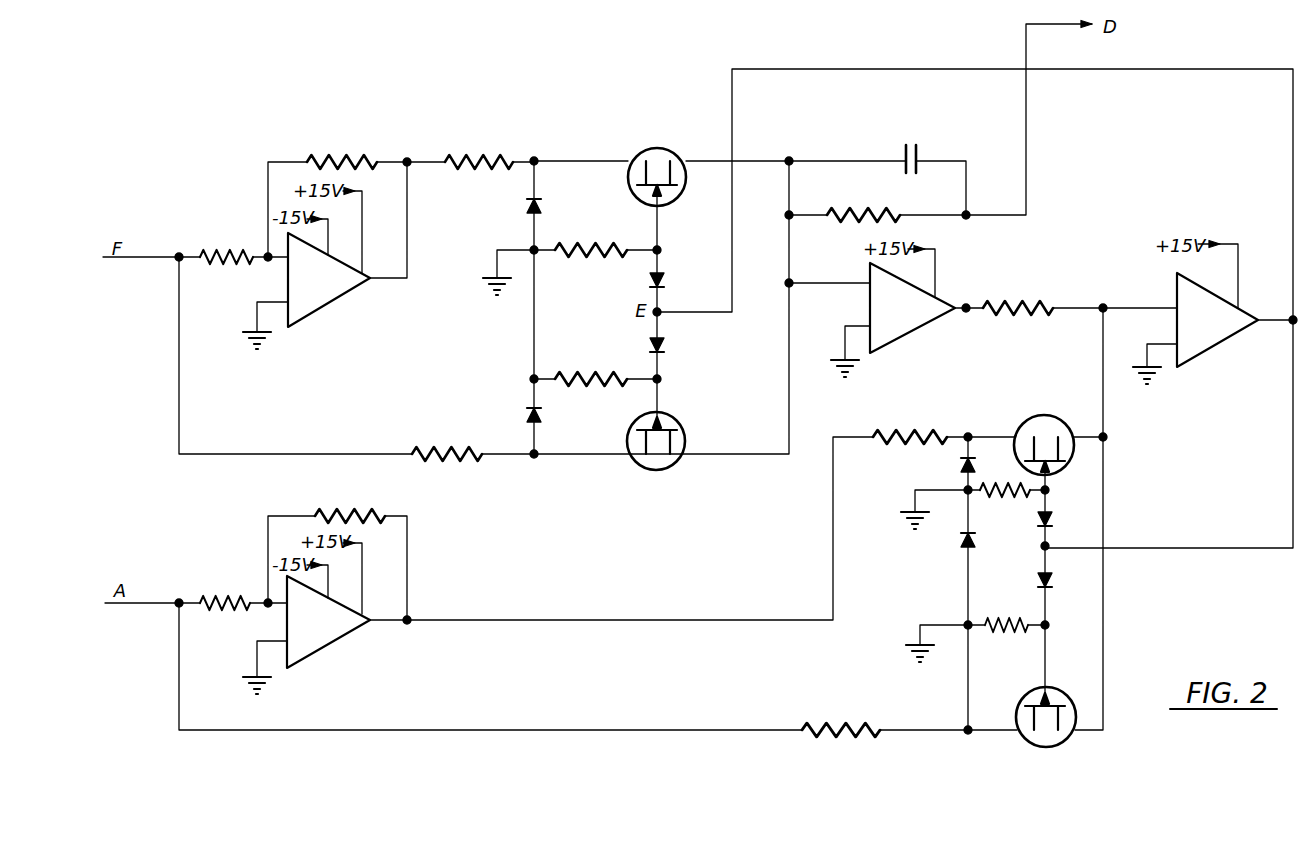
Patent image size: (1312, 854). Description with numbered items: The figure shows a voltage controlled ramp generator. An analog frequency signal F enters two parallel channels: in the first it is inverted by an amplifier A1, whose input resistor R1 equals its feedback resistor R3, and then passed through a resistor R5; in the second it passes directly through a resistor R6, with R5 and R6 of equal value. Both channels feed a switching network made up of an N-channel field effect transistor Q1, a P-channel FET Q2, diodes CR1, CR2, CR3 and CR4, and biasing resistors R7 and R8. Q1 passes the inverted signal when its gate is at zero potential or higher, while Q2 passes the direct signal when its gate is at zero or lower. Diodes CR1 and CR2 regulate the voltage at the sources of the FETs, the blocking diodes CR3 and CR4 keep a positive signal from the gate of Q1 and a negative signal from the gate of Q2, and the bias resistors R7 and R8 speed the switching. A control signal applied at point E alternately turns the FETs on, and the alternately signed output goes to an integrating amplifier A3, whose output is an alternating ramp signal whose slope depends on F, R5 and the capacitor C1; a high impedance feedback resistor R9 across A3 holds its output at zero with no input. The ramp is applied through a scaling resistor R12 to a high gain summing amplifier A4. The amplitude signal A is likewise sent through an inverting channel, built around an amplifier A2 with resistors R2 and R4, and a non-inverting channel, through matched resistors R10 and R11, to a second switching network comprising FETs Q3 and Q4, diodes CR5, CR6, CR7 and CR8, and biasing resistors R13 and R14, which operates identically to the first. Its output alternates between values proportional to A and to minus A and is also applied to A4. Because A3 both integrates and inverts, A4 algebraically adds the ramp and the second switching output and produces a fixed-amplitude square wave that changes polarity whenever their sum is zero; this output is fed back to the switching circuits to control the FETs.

The resistor R1 is at (226, 247).
The resistor R2 is at (225, 592).
The resistor R3 is at (342, 152).
The resistor R4 is at (350, 505).
The resistor R5 is at (479, 150).
The resistor R6 is at (447, 445).
The bias resistor R7 is at (591, 240).
The bias resistor R8 is at (591, 369).
The high impedance feedback resistor R9 is at (863, 207).
The matched resistor R10 is at (910, 428).
The matched resistor R11 is at (841, 721).
The scaling resistor R12 is at (1018, 299).
The bias resistor R13 is at (1005, 501).
The bias resistor R14 is at (1006, 615).
The capacitor C1 is at (908, 148).
The diode CR1 is at (507, 208).
The diode CR2 is at (507, 415).
The blocking diode CR3 is at (677, 280).
The blocking diode CR4 is at (678, 345).
The diode CR5 is at (946, 469).
The diode CR6 is at (947, 541).
The diode CR7 is at (1064, 520).
The diode CR8 is at (1064, 580).
The N-channel field effect transistor Q1 is at (655, 177).
The P-channel FET Q2 is at (655, 439).
The FET Q3 is at (1042, 442).
The FET Q4 is at (1044, 717).
The amplifier A1 is at (329, 280).
The amplifier A2 is at (328, 622).
The integrating amplifier A3 is at (912, 308).
The high gain summing amplifier A4 is at (1217, 320).